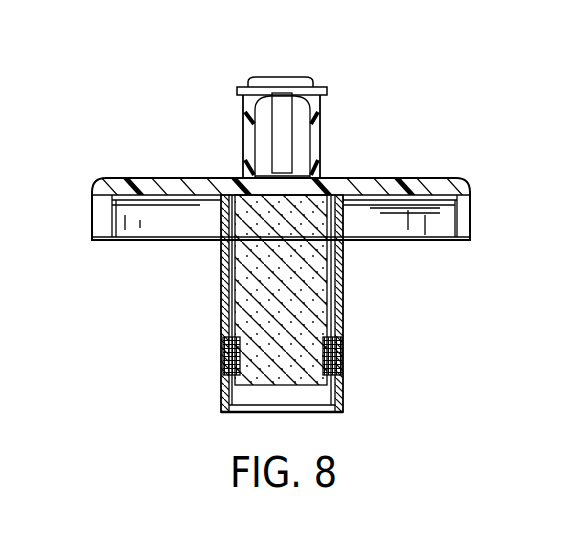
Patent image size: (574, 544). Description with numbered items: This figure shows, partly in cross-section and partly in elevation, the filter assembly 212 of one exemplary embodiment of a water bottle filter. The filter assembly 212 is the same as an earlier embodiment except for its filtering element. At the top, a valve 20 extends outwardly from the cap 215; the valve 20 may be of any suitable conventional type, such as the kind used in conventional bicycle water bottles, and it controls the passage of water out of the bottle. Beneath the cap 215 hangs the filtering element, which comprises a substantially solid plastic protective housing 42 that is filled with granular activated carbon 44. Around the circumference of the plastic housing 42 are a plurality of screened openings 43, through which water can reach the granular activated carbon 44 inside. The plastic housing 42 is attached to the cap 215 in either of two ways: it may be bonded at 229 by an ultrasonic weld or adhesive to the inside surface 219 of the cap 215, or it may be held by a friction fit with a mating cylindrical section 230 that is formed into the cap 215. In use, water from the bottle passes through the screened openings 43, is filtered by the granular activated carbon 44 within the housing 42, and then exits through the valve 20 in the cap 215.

The valve 20 is at (235, 105).
The filter assembly 212 is at (148, 108).
The cap 215 is at (90, 190).
The inside surface of the cap 219 is at (165, 198).
The bond 229 is at (207, 200).
The mating cylindrical section 230 is at (400, 181).
The plastic protective housing 42 is at (222, 318).
The screened openings 43 is at (223, 358).
The granular activated carbon 44 is at (265, 283).